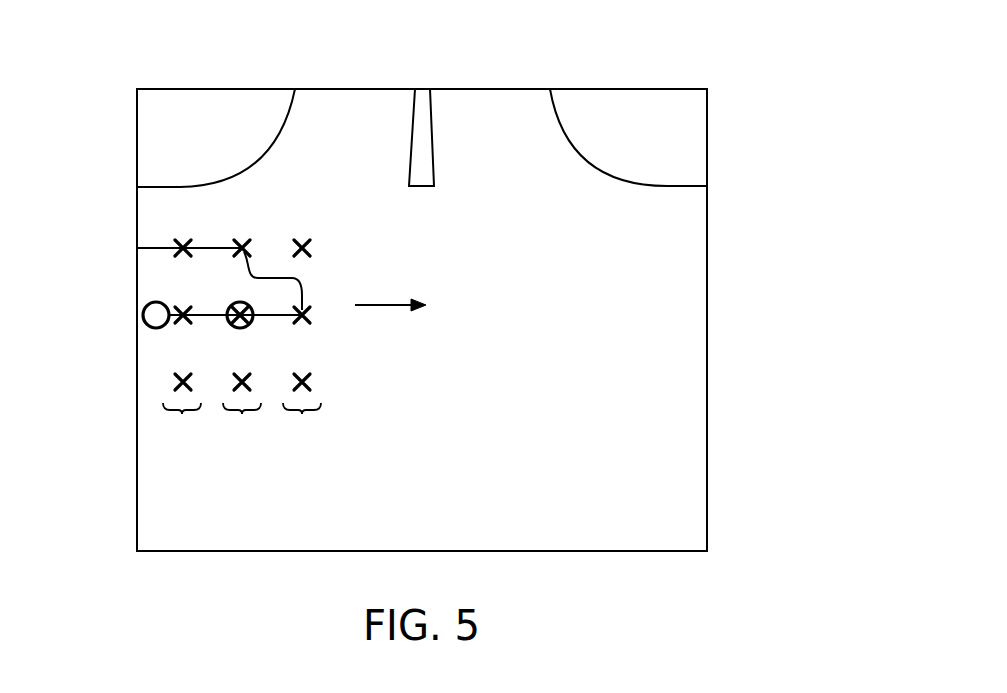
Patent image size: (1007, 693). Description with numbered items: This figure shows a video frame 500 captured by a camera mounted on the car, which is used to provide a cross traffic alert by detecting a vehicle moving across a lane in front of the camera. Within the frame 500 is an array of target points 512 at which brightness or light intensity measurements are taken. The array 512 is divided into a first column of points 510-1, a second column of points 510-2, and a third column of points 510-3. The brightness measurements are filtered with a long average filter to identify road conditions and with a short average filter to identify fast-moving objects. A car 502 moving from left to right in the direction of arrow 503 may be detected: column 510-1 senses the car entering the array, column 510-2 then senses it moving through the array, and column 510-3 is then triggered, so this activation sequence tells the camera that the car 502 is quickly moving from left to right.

The video frame 500 is at (662, 89).
The car 502 is at (148, 273).
The arrow 503 is at (390, 307).
The first column of points 510-1 is at (179, 409).
The second column of points 510-2 is at (243, 414).
The third column of points 510-3 is at (300, 409).
The array of target points 512 is at (322, 240).